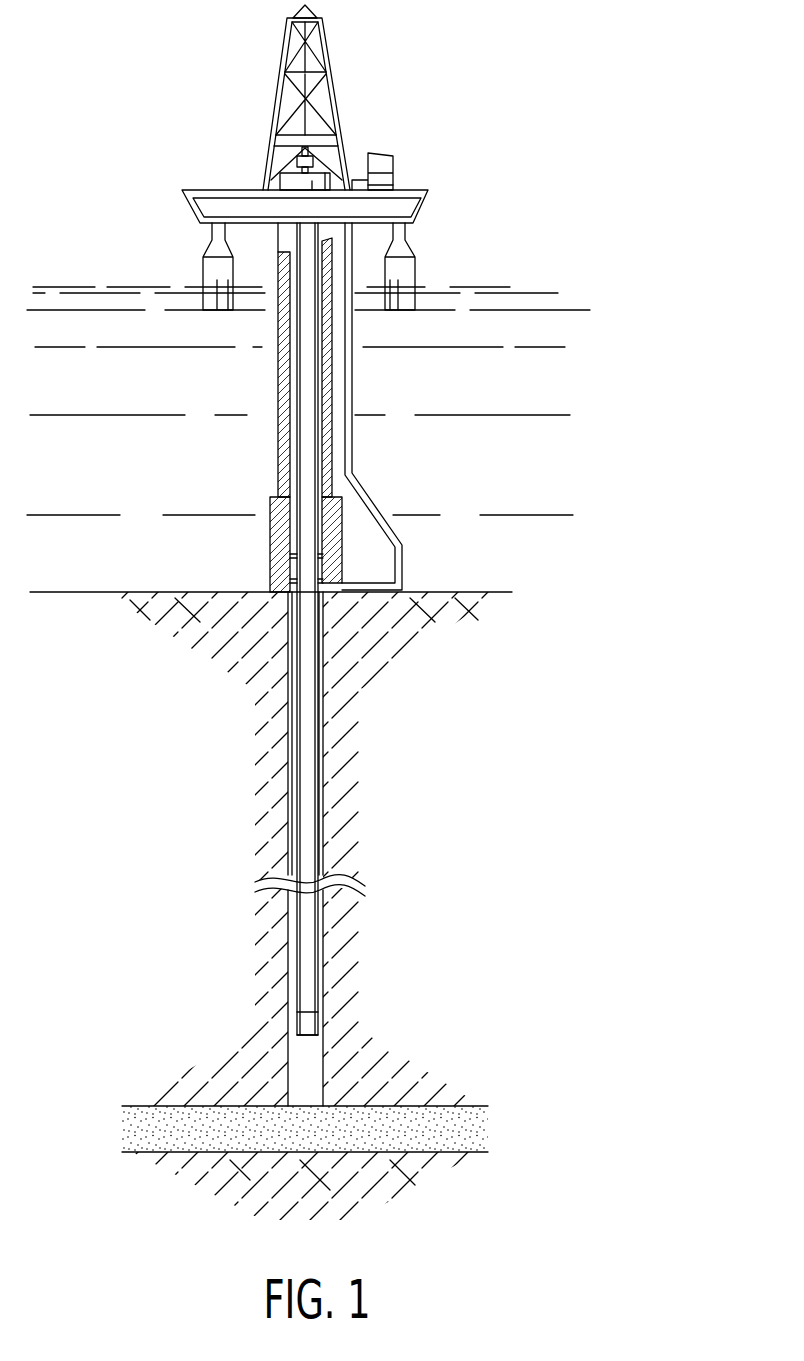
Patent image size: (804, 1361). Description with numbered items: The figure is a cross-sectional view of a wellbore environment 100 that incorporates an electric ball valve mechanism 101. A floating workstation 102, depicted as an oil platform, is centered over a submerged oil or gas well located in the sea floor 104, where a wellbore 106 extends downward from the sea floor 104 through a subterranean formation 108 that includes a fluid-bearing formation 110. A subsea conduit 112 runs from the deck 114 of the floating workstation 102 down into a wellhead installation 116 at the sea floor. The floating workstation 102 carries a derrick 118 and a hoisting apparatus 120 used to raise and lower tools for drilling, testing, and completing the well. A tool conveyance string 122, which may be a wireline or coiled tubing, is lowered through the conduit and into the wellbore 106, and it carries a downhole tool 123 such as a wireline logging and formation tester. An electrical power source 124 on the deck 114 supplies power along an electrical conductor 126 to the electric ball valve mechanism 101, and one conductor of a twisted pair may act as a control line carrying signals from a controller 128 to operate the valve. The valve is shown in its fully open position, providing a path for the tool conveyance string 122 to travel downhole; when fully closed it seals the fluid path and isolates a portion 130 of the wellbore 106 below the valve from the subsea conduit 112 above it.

The wellbore environment 100 is at (500, 120).
The electric ball valve mechanism 101 is at (290, 570).
The floating workstation 102 is at (398, 275).
The sea floor 104 is at (455, 592).
The wellbore 106 is at (325, 782).
The subterranean formation 108 is at (338, 988).
The fluid-bearing formation 110 is at (468, 1118).
The subsea conduit 112 is at (279, 465).
The deck 114 is at (200, 190).
The wellhead installation 116 is at (280, 511).
The derrick 118 is at (325, 44).
The hoisting apparatus 120 is at (307, 171).
The tool conveyance string 122 is at (307, 437).
The downhole tool 123 is at (305, 1027).
The electrical power source 124 is at (393, 184).
The electrical conductor 126 is at (352, 386).
The controller 128 is at (388, 165).
The portion of the wellbore 130 is at (280, 672).